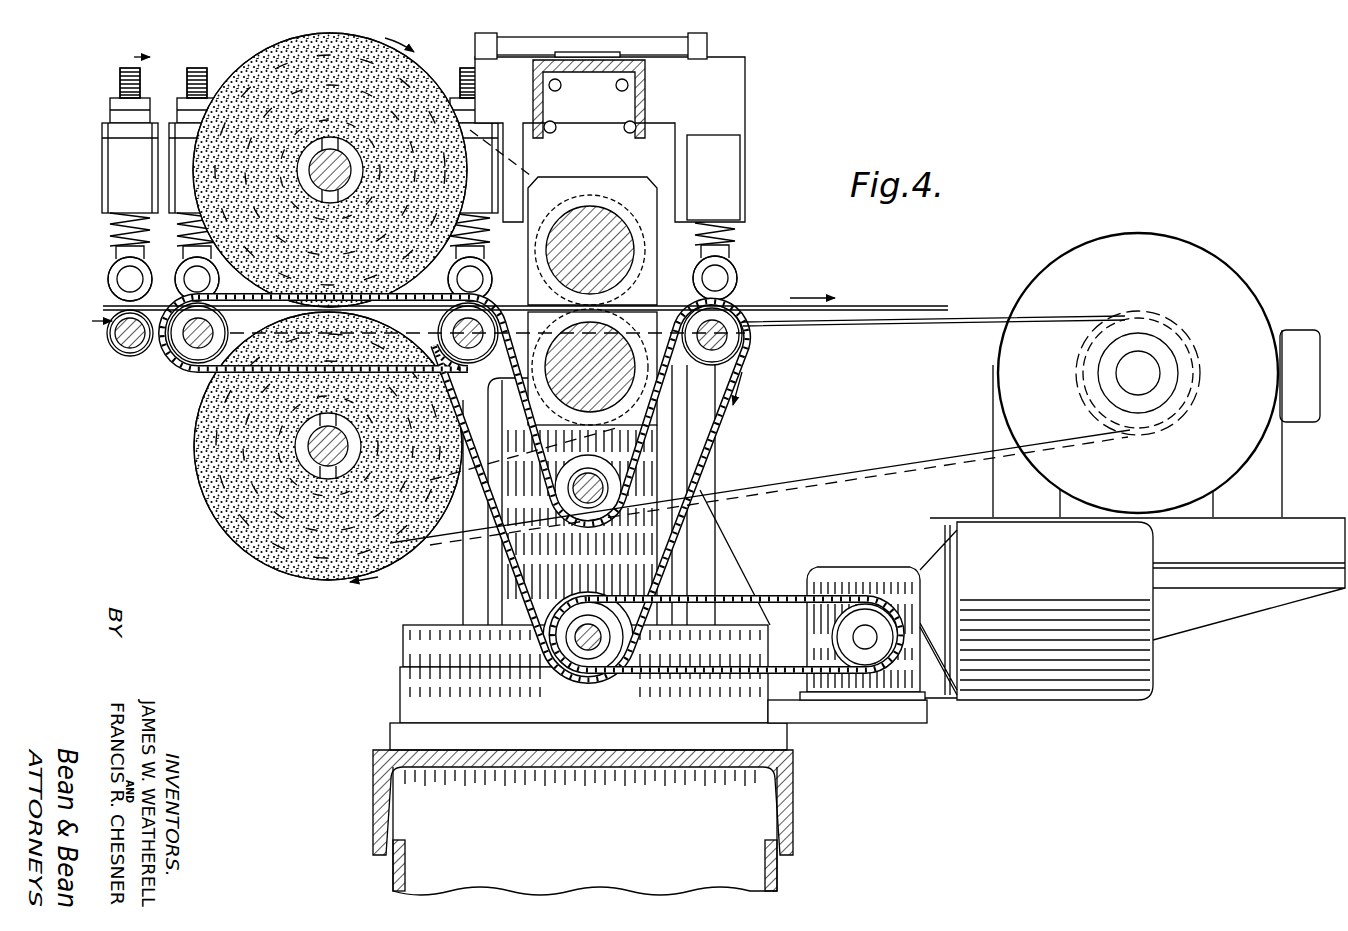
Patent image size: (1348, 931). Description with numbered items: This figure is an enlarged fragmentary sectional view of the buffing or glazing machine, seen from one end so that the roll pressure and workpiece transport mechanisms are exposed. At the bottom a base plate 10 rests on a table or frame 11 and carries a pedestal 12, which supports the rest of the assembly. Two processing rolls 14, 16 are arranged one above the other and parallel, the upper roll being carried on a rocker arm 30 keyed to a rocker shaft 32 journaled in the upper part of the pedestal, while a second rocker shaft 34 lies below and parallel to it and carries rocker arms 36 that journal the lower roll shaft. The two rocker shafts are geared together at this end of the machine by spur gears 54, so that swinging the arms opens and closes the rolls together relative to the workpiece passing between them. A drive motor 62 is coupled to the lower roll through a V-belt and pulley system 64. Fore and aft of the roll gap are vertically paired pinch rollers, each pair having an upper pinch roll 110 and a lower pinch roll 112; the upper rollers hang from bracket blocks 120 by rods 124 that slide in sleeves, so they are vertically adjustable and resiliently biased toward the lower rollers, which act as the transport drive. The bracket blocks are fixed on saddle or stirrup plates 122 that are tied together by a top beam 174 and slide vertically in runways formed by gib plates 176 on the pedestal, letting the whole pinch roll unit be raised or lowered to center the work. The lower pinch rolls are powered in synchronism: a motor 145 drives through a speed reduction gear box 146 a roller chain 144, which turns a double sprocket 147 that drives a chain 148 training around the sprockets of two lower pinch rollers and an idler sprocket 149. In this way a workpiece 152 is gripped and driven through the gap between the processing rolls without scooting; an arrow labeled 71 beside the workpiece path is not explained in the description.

The base plate 10 is at (795, 786).
The table or frame 11 is at (778, 870).
The pedestal 12 is at (467, 591).
The processing roll 14 is at (258, 60).
The processing roll 16 is at (218, 522).
The rocker arm 30 is at (540, 172).
The rocker shaft 32 is at (586, 215).
The second rocker shaft 34 is at (630, 392).
The rocker arm 36 is at (487, 425).
The spur gear 54 is at (645, 188).
The drive motor 62 is at (1196, 252).
The V-belt and pulley system 64 is at (972, 320).
The direction arrow 71 is at (113, 189).
The upper pinch roll 110 is at (108, 281).
The lower pinch roll 112 is at (125, 353).
The bracket block 120 is at (100, 165).
The saddle plate 122 is at (748, 100).
The cylindrical rod 124 is at (124, 78).
The roller chain 144 is at (797, 600).
The motor 145 is at (1070, 577).
The speed reduction gear box 146 is at (862, 580).
The double sprocket 147 is at (565, 660).
The chain 148 is at (715, 436).
The idler sprocket 149 is at (605, 477).
The workpiece 152 is at (878, 307).
The top beam 174 is at (645, 88).
The gib plate 176 is at (480, 46).